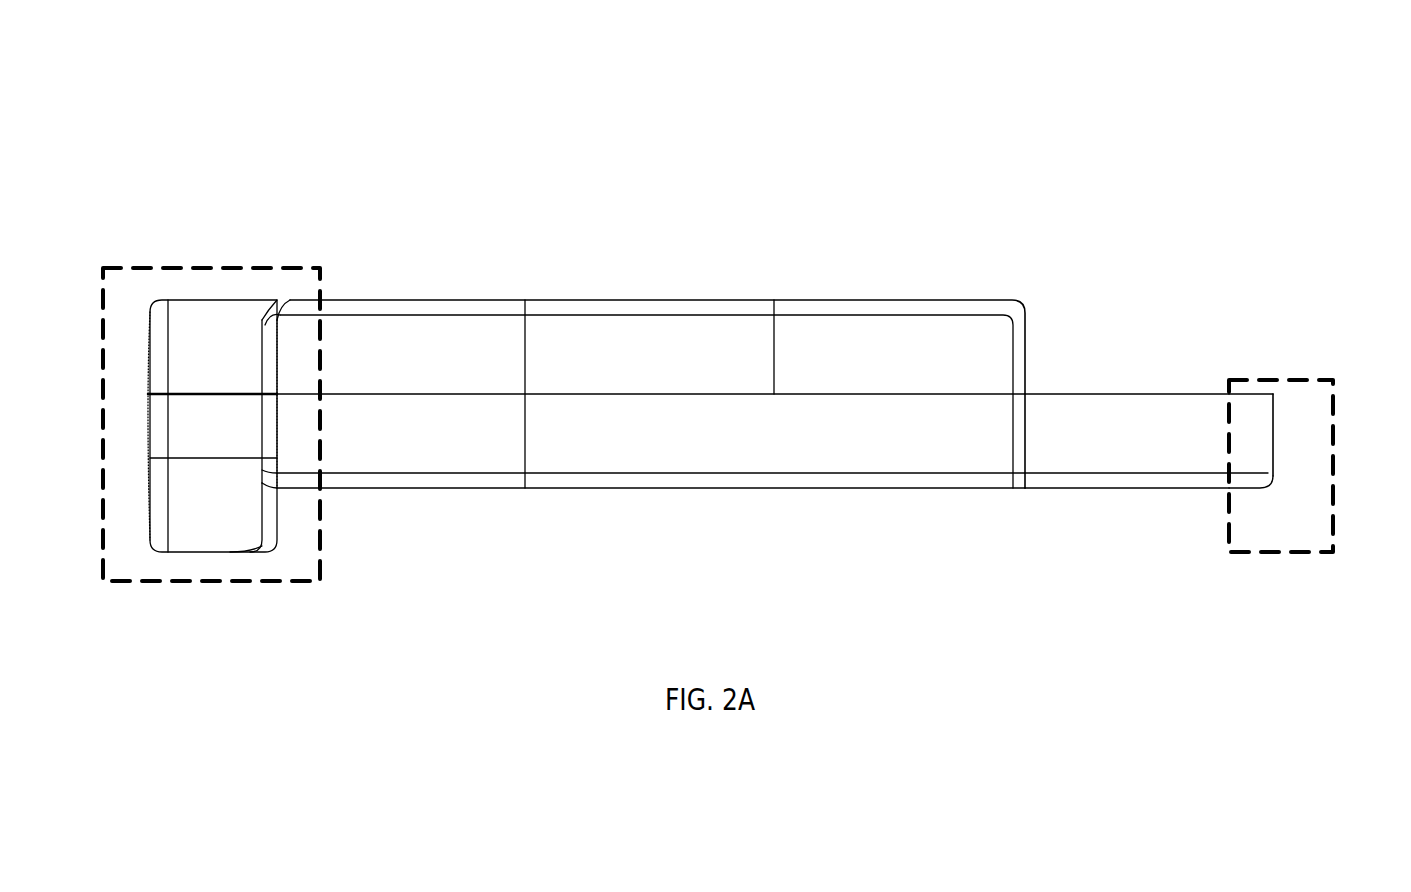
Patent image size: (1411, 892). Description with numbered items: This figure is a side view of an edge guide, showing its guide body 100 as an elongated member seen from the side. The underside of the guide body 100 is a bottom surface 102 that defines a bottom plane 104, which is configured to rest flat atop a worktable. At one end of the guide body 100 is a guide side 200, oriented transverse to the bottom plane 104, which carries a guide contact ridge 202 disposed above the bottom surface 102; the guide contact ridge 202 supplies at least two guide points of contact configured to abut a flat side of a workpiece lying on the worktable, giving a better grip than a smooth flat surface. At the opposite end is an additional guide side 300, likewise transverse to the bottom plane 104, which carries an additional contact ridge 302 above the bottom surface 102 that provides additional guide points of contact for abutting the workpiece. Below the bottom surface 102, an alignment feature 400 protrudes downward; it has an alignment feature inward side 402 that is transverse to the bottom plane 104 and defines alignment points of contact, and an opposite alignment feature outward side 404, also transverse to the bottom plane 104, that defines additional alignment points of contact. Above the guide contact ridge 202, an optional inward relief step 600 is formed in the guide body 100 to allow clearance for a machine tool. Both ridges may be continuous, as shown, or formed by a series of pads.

The guide body 100 is at (258, 111).
The bottom surface 102 is at (750, 490).
The bottom plane 104 is at (643, 487).
The guide side 200 is at (1274, 431).
The guide contact ridge 202 is at (1278, 393).
The additional guide side 300 is at (147, 452).
The additional contact ridge 302 is at (148, 393).
The alignment feature 400 is at (209, 527).
The alignment feature inward side 402 is at (278, 526).
The alignment feature outward side 404 is at (147, 518).
The inward relief step 600 is at (1122, 314).